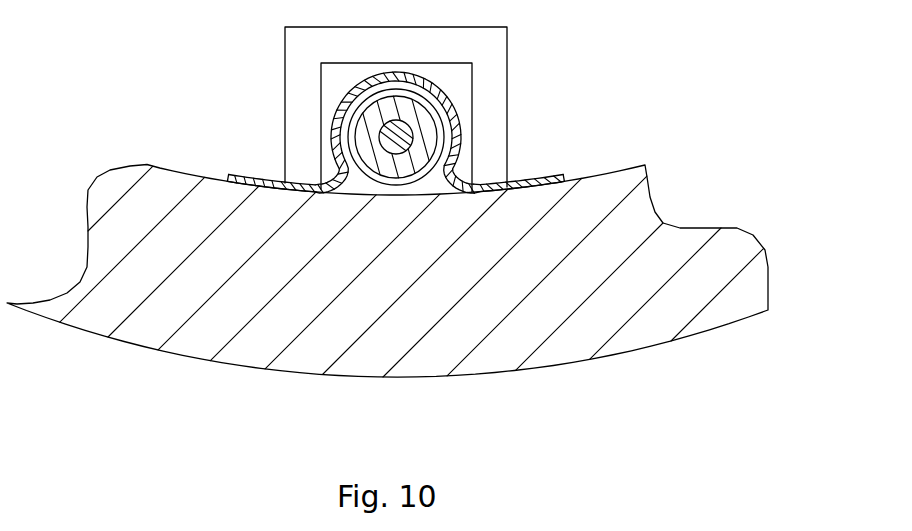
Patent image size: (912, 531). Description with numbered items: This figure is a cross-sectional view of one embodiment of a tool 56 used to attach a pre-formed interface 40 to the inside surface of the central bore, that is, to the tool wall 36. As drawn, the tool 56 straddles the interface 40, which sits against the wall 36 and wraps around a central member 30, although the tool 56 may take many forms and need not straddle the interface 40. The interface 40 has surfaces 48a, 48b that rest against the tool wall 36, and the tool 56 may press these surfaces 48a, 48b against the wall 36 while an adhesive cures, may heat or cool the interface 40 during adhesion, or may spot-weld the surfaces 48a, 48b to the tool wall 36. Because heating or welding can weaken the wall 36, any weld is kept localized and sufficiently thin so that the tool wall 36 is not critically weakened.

The tube 30 is at (363, 128).
The tool wall 36 is at (260, 343).
The interface 40 is at (450, 112).
The surface 48a is at (247, 175).
The surface 48b is at (530, 178).
The tool 56 is at (495, 55).